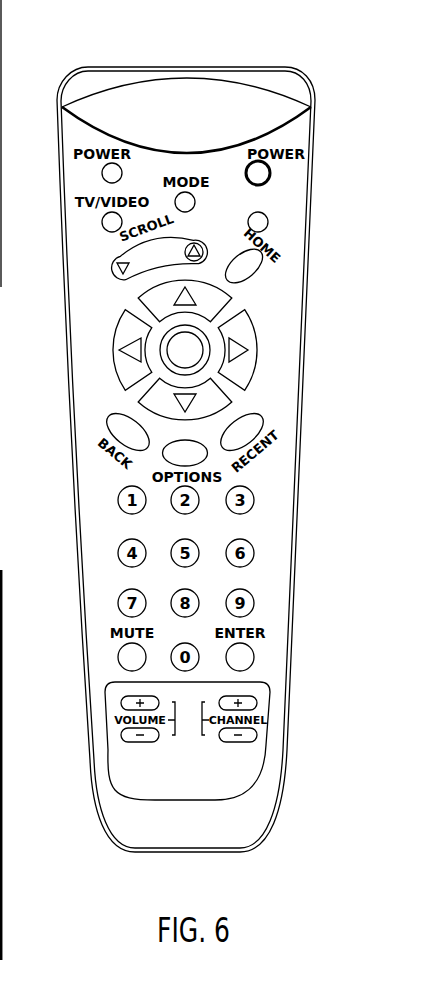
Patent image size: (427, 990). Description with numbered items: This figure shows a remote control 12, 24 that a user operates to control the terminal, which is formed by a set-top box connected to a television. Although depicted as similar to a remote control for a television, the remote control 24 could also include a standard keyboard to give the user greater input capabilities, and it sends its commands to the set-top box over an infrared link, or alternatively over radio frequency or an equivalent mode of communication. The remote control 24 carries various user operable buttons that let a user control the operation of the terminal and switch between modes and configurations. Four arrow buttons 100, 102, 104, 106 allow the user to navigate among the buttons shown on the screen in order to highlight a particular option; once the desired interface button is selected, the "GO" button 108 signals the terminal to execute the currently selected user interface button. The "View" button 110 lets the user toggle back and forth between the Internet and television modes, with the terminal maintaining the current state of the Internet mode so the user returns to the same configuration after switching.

The remote control 12 is at (0, 660).
The remote control 24 is at (240, 72).
The arrow button 100 is at (140, 298).
The arrow button 102 is at (245, 372).
The arrow button 104 is at (222, 400).
The arrow button 106 is at (113, 332).
The "GO" button 108 is at (152, 357).
The "View" button 110 is at (262, 224).